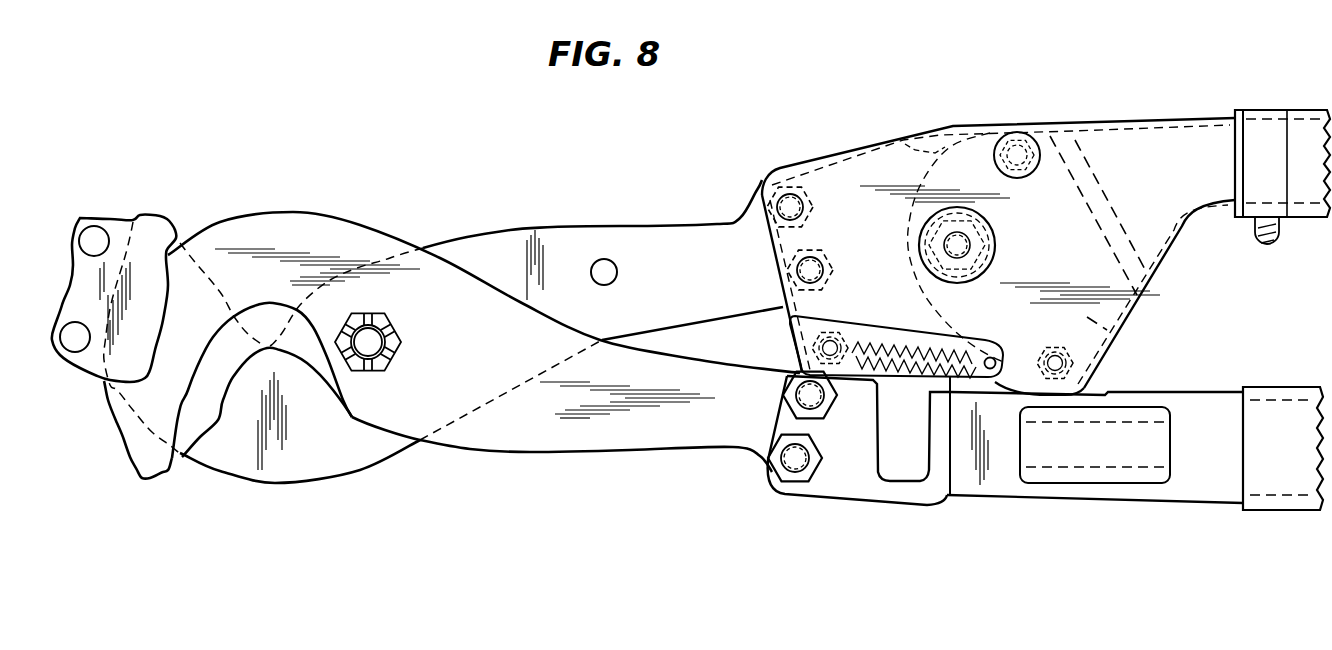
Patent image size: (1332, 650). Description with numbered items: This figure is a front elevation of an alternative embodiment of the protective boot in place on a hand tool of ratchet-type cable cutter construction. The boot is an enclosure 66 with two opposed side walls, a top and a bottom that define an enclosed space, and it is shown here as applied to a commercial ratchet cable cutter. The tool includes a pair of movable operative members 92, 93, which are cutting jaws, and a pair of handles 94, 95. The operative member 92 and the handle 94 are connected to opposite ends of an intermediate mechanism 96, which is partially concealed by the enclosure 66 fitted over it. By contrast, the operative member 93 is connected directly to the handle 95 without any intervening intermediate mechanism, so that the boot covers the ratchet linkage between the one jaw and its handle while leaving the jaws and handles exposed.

The enclosure 66 is at (952, 128).
The operative member 92 is at (562, 229).
The operative member 93 is at (530, 448).
The handle 94 is at (1302, 108).
The handle 95 is at (1280, 512).
The intermediate mechanism 96 is at (1118, 329).